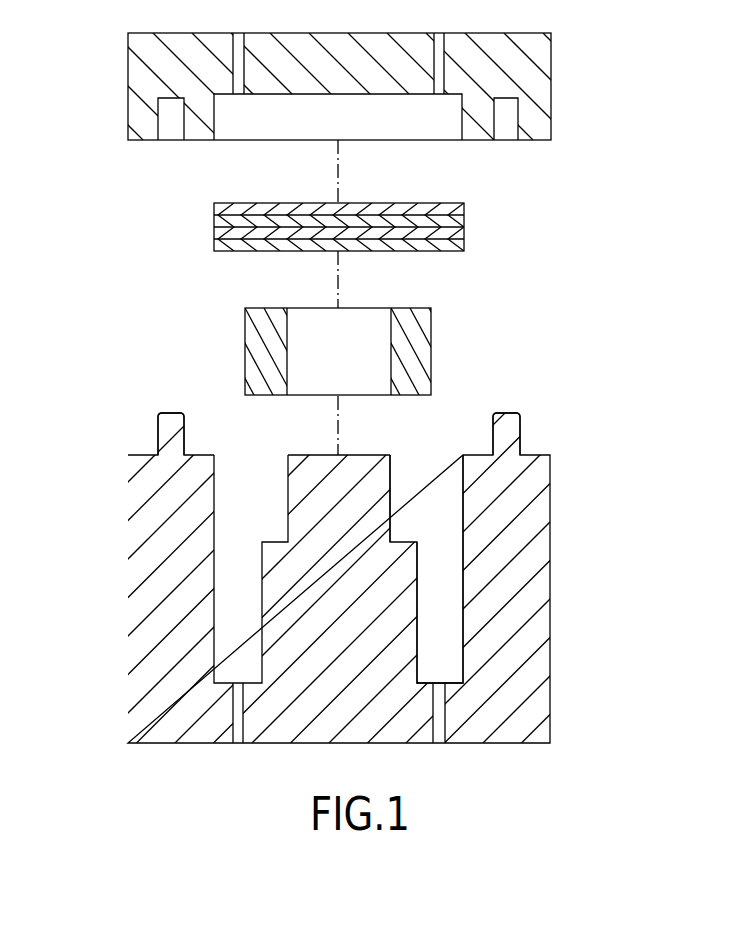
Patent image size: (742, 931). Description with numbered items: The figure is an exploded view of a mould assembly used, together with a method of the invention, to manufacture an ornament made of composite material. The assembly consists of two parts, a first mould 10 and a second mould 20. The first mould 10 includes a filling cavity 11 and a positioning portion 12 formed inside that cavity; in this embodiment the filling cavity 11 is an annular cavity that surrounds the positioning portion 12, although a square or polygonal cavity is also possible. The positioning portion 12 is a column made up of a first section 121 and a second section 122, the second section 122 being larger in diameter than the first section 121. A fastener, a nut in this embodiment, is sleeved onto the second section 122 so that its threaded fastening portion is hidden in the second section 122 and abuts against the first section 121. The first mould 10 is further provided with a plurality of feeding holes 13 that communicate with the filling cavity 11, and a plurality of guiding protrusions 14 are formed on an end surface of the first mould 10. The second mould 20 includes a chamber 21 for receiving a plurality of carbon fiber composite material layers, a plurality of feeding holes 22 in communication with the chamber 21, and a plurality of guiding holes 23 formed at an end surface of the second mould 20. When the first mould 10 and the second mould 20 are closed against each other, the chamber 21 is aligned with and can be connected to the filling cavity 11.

The first mould 10 is at (560, 452).
The filling cavity 11 is at (233, 590).
The positioning portion 12 is at (623, 497).
The first section 121 is at (405, 612).
The second section 122 is at (372, 493).
The feeding holes 13 is at (238, 722).
The guiding protrusions 14 is at (167, 437).
The second mould 20 is at (122, 86).
The chamber 21 is at (365, 120).
The feeding holes 22 is at (240, 72).
The guiding holes 23 is at (172, 130).